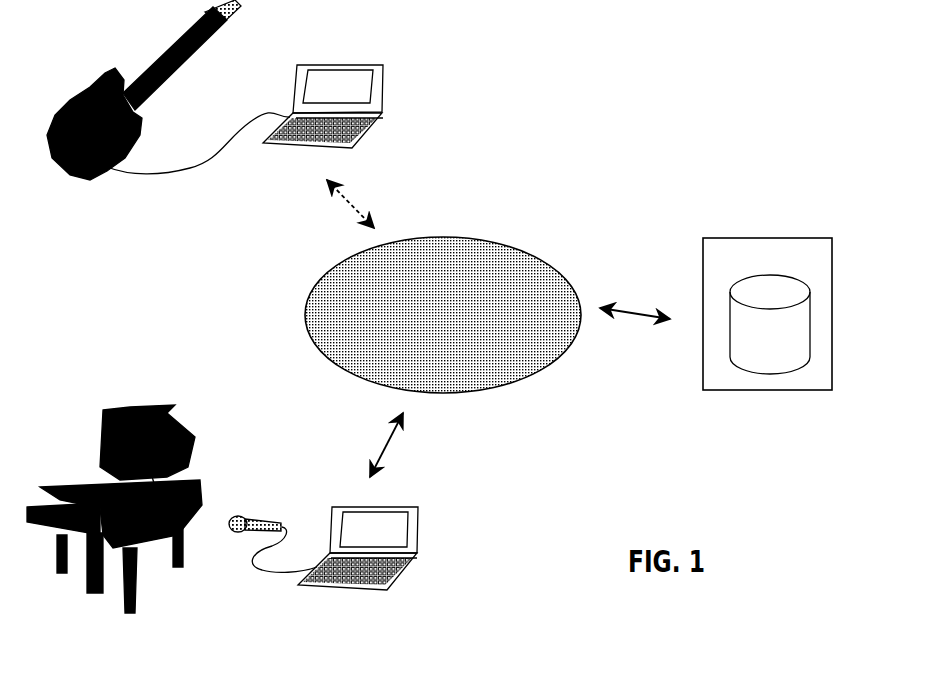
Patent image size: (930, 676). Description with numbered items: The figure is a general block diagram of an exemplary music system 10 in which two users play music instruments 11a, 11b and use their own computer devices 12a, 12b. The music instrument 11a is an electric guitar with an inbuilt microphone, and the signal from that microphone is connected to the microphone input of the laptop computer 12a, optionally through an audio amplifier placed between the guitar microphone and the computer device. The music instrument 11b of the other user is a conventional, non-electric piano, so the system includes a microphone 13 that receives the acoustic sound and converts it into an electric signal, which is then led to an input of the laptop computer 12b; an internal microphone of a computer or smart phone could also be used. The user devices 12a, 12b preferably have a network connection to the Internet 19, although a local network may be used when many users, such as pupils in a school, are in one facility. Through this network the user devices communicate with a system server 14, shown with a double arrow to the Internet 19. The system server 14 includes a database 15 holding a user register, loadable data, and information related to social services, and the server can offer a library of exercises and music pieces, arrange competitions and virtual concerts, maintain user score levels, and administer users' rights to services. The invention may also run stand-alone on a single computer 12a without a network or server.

The music collaboration system 10 is at (577, 96).
The music instrument 11a is at (108, 177).
The music instrument 11b is at (202, 492).
The computer device 12a is at (388, 112).
The computer device 12b is at (433, 540).
The microphone 13 is at (233, 540).
The system server 14 is at (703, 290).
The database 15 is at (770, 275).
The Internet 19 is at (517, 375).